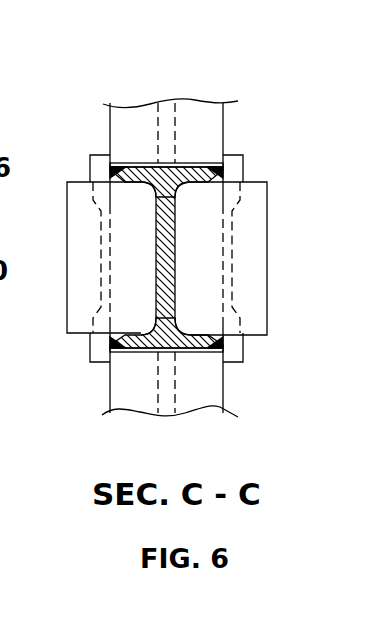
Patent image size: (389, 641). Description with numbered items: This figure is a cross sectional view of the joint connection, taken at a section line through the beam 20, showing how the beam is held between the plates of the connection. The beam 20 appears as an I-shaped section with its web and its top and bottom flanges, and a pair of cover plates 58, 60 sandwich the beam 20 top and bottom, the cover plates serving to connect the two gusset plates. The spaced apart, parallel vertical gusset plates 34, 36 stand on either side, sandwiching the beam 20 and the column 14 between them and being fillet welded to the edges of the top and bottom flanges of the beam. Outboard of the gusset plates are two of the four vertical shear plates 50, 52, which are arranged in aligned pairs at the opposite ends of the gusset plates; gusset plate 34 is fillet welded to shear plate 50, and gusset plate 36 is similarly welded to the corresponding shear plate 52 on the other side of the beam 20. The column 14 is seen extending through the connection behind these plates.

The column 14 is at (138, 128).
The cover plate 58 is at (191, 173).
The gusset plate 34 is at (100, 168).
The gusset plate 36 is at (235, 170).
The shear plate 50 is at (75, 260).
The shear plate 52 is at (207, 285).
The beam 20 is at (175, 255).
The cover plate 60 is at (143, 352).